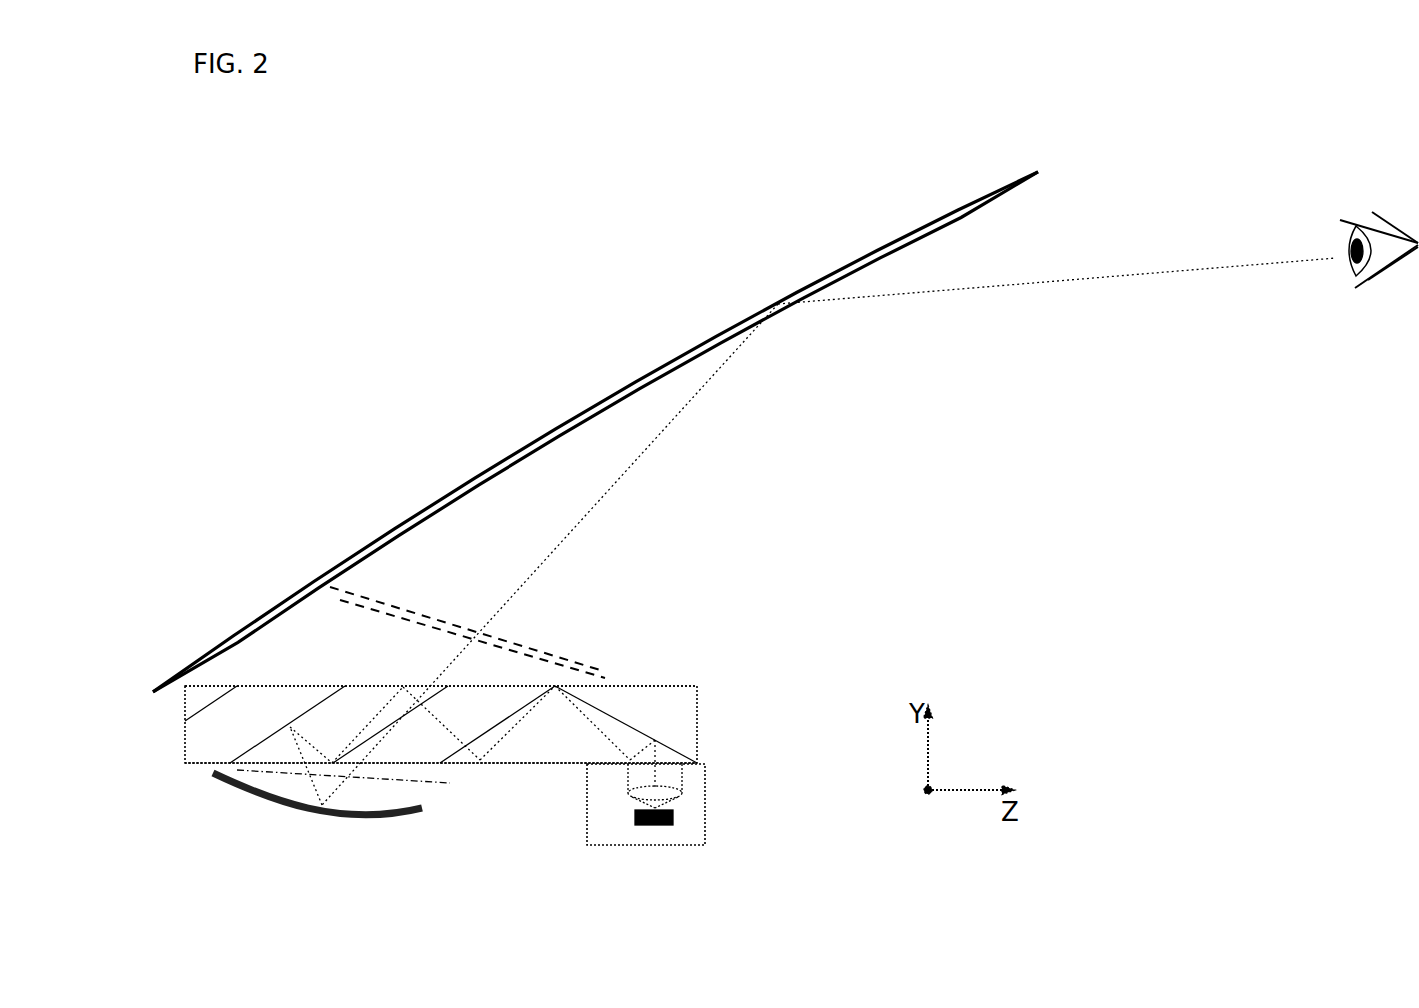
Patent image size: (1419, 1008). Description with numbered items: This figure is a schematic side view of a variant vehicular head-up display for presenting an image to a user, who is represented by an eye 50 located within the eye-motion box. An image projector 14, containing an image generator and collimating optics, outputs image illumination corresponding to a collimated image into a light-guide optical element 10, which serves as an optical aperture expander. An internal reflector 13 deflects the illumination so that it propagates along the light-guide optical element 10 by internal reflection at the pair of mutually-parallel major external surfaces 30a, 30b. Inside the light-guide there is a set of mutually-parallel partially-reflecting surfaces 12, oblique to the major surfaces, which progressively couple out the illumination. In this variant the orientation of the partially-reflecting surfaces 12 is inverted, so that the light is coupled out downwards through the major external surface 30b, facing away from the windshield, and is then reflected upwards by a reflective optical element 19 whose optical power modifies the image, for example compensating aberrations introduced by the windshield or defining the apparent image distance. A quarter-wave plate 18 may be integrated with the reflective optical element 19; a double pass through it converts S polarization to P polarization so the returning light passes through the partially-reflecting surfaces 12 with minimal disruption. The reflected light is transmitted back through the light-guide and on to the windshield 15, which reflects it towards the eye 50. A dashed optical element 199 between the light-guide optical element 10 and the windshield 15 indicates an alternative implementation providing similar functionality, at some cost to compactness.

The light-guide optical element 10 is at (568, 720).
The partially-reflecting surfaces 12 is at (370, 727).
The internal reflector 13 is at (641, 716).
The image projector 14 is at (646, 821).
The windshield 15 is at (598, 416).
The quarter-wave plate 18 is at (361, 785).
The reflective optical element 19 is at (317, 811).
The optical element 199 is at (467, 632).
The major external surface 30a is at (357, 681).
The major external surface 30b is at (192, 776).
The eye of the user 50 is at (1098, 262).